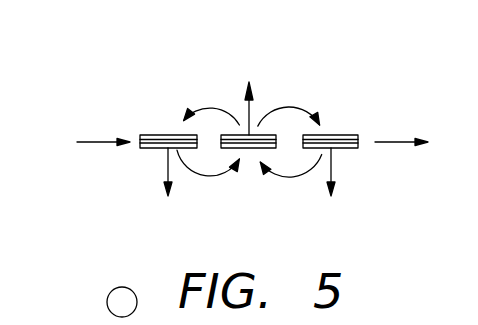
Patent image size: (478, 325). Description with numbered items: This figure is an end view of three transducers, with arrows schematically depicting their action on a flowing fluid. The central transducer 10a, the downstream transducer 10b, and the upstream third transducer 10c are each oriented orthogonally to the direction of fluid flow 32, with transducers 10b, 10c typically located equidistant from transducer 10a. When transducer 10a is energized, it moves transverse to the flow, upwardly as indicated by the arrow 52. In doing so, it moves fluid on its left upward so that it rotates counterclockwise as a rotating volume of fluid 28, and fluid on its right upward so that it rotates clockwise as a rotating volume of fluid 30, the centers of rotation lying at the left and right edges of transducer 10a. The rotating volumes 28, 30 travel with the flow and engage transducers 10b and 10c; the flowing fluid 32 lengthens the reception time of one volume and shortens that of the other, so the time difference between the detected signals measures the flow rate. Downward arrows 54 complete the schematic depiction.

The transducer 10a is at (222, 152).
The transducer 10b is at (352, 149).
The third transducer 10c is at (147, 149).
The rotating volume of fluid 28 is at (187, 107).
The rotating volume of fluid 30 is at (292, 107).
The flow direction 32 is at (92, 143).
The arrow 52 is at (253, 112).
The downward flow arrow 54 is at (167, 169).